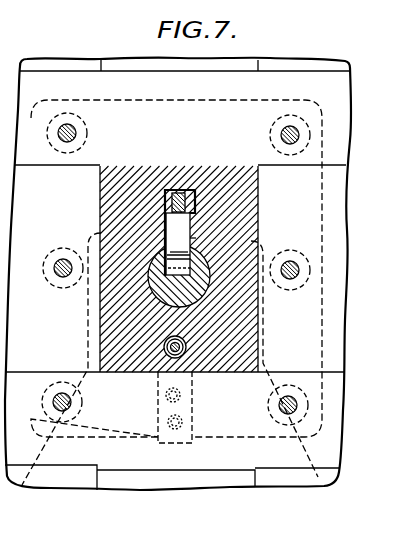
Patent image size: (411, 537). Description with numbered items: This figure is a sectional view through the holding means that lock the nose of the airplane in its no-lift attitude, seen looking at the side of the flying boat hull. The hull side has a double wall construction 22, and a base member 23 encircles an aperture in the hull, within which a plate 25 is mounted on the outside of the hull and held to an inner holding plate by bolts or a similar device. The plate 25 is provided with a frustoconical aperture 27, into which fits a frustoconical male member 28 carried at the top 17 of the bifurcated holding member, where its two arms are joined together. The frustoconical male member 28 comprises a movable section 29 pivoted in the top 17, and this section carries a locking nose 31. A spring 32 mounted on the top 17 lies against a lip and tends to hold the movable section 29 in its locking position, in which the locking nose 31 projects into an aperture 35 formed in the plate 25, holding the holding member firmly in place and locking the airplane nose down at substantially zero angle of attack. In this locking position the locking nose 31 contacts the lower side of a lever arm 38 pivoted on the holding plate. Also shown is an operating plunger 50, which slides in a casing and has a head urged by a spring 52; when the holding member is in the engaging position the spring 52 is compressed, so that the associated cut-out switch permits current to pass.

The top of holding member 17 is at (81, 328).
The double wall construction 22 is at (186, 480).
The base member 23 is at (108, 75).
The plate 25 is at (107, 202).
The frustoconical aperture 27 is at (176, 251).
The frustoconical male member 28 is at (200, 293).
The movable section 29 is at (173, 258).
The locking nose 31 is at (183, 230).
The spring 32 is at (192, 387).
The aperture 35 is at (196, 238).
The lever arm 38 is at (181, 201).
The operating plunger 50 is at (173, 353).
The spring 52 is at (164, 346).